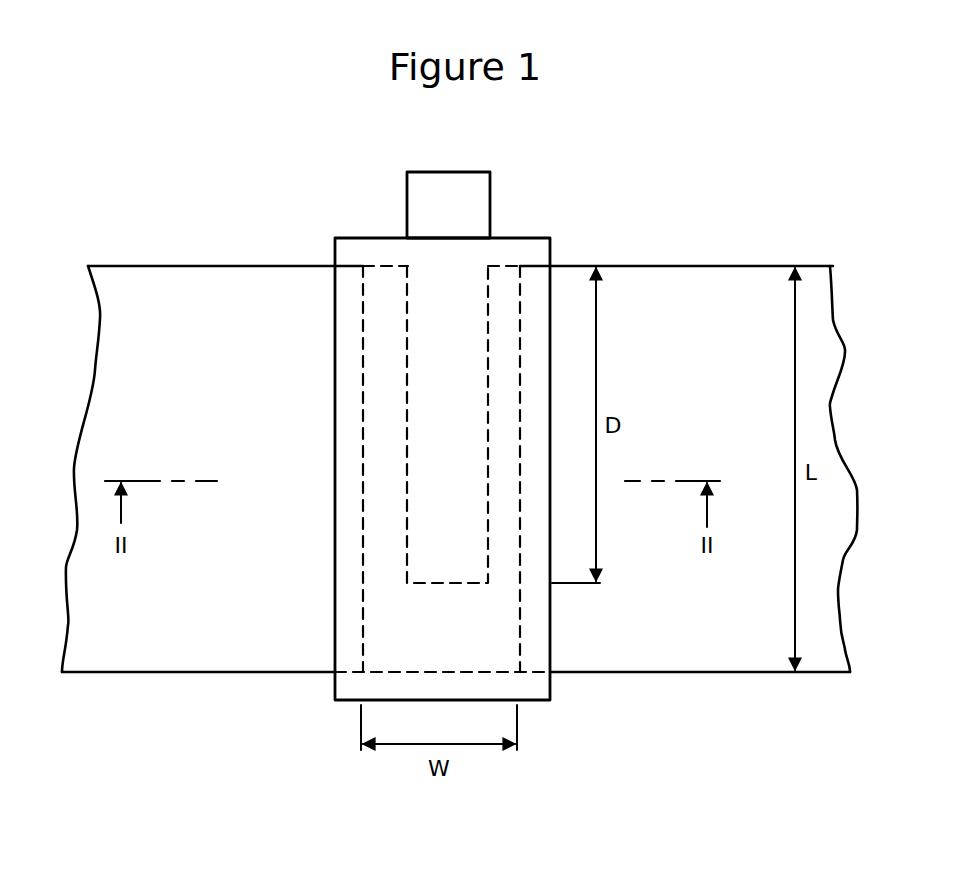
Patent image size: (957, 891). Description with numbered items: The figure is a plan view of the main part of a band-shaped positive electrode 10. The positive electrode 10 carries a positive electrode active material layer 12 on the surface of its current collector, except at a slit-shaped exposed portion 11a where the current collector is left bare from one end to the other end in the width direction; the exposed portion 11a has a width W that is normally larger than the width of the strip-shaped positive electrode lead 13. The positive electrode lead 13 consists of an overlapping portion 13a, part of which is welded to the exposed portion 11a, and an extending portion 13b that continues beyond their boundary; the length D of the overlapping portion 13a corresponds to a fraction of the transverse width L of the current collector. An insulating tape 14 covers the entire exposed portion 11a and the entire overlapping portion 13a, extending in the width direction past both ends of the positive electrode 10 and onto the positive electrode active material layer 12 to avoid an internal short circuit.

The positive electrode 10 is at (646, 155).
The exposed portion 11a is at (497, 617).
The positive electrode active material layer 12 is at (727, 642).
The positive electrode lead 13 is at (263, 113).
The overlapping portion 13a is at (445, 347).
The extending portion 13b is at (430, 198).
The insulating tape 14 is at (536, 236).